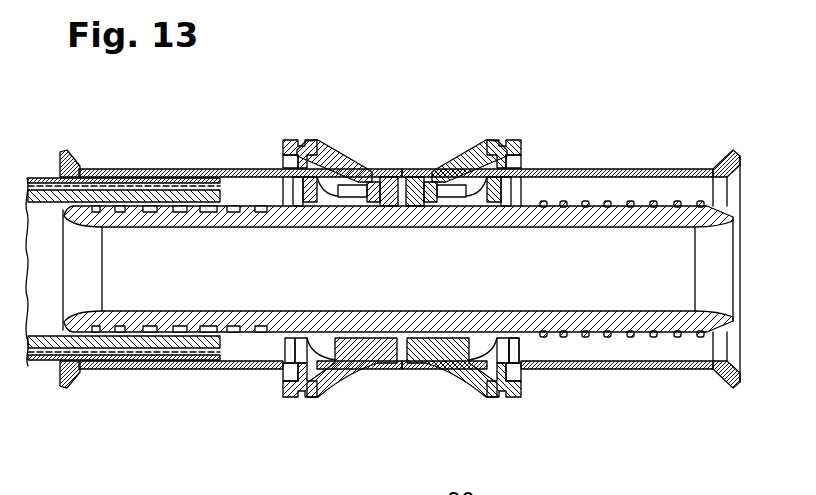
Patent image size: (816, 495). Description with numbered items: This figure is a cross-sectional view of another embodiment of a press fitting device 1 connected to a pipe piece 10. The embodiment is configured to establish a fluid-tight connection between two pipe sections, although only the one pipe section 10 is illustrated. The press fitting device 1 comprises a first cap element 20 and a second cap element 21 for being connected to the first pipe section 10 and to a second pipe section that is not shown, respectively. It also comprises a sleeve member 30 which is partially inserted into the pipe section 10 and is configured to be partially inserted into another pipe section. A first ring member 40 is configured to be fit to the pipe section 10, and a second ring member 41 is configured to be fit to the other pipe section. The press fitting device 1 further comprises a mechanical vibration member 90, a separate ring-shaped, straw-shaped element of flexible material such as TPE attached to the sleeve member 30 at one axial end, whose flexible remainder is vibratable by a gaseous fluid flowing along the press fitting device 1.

The press fitting device 1 is at (547, 109).
The pipe section 10 is at (28, 366).
The first cap element 20 is at (193, 168).
The second cap element 21 is at (658, 169).
The sleeve member 30 is at (242, 335).
The first ring member 40 is at (333, 140).
The second ring member 41 is at (470, 150).
The mechanical vibration member 90 is at (522, 340).